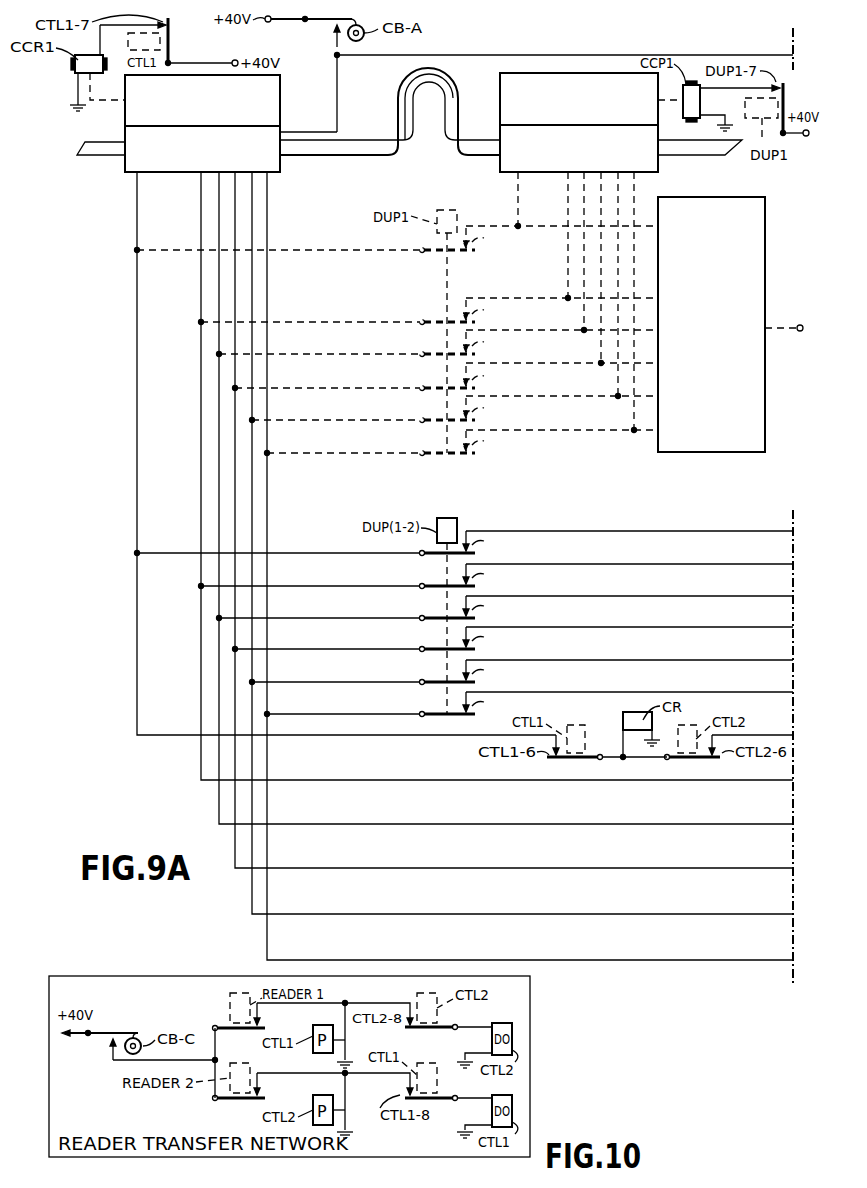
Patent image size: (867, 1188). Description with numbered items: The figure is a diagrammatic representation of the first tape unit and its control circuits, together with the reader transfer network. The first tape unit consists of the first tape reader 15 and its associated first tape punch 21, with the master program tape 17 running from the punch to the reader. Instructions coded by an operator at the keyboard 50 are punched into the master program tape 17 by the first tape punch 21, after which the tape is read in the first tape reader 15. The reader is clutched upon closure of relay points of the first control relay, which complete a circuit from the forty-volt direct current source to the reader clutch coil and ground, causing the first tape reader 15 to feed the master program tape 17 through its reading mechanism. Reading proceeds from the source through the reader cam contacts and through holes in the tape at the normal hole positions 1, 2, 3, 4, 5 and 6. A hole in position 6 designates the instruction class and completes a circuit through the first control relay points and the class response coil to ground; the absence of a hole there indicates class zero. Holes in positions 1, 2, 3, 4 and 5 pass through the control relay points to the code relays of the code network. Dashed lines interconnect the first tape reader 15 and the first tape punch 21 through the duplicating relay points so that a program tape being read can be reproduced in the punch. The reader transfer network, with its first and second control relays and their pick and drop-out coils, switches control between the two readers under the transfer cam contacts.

The first tape reader 15 is at (128, 168).
The master program tape 17 is at (398, 102).
The first tape punch 21 is at (556, 174).
The keyboard 50 is at (760, 410).
The 1 tape hole 1 is at (496, 380).
The 2 tape hole 2 is at (505, 396).
The 3 tape hole 3 is at (513, 412).
The 4 tape hole 4 is at (522, 428).
The 5 tape hole 5 is at (529, 444).
The 6 tape hole 6 is at (464, 364).